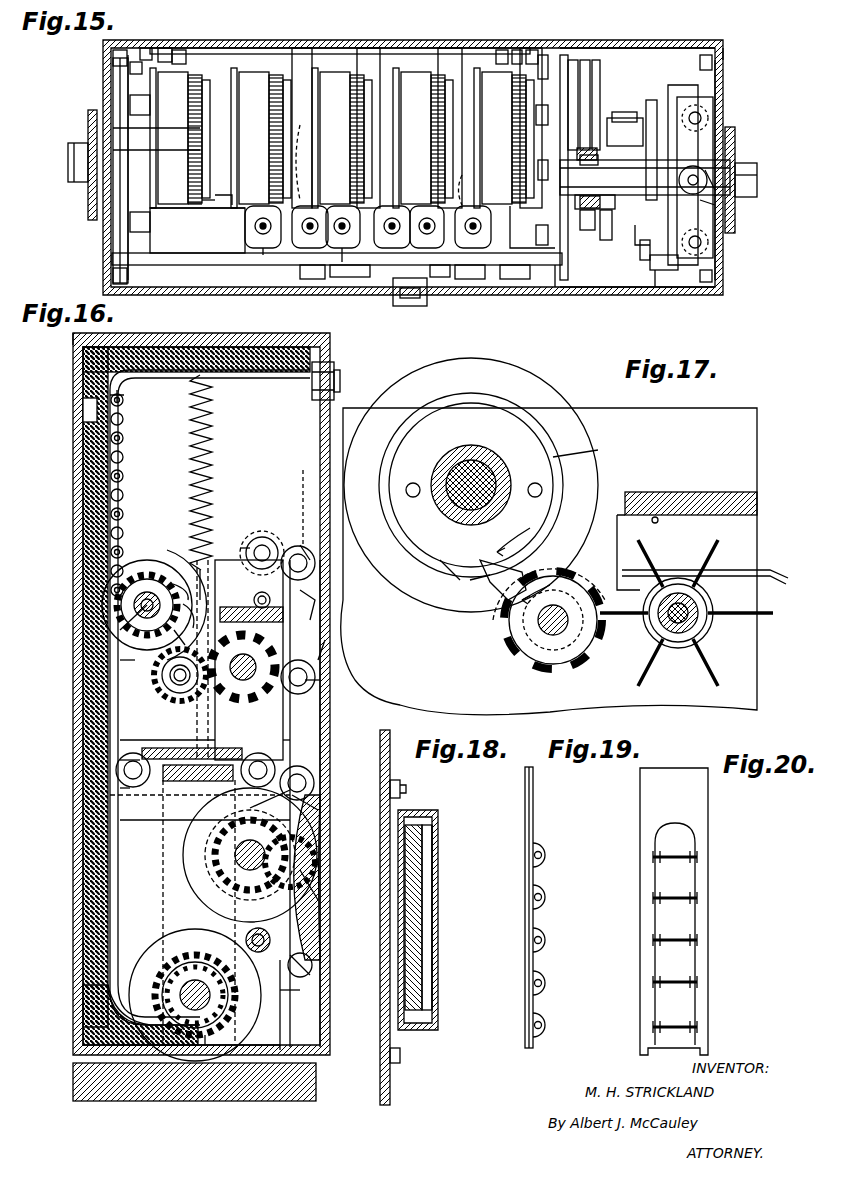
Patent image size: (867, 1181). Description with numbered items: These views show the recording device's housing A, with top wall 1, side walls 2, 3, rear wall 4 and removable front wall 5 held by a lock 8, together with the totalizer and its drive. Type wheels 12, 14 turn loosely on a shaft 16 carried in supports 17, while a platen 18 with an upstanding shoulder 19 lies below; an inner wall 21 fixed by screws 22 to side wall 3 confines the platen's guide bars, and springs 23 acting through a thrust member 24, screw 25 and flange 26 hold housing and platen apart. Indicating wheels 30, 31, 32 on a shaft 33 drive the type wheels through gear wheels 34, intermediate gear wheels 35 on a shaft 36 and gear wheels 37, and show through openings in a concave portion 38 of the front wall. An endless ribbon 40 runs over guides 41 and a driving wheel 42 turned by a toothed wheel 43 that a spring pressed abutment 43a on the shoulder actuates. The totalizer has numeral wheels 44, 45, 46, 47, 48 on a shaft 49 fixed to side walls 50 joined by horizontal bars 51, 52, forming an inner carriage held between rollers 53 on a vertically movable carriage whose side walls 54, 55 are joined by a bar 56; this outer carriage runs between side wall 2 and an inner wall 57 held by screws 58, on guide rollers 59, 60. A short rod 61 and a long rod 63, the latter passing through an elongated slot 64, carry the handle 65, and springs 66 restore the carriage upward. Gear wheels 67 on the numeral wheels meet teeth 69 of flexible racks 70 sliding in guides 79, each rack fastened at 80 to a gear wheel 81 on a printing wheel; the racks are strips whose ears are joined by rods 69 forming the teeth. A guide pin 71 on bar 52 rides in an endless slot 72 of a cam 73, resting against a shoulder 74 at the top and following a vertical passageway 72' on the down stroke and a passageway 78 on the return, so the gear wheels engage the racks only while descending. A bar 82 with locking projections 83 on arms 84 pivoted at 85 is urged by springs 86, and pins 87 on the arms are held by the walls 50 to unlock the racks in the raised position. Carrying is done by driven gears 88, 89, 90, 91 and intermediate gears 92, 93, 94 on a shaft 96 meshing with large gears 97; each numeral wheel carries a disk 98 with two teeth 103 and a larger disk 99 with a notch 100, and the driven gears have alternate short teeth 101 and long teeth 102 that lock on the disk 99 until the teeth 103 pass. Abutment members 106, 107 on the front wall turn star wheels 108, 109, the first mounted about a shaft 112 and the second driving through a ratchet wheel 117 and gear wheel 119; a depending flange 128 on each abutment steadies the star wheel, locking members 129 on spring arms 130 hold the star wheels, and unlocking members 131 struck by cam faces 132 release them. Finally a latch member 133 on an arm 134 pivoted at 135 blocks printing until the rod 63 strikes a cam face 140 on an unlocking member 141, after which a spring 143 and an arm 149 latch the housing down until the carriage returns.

In FIG. 15, the top wall 1 is at (413, 148).
In FIG. 16, the top wall 1 is at (212, 345).
In FIG. 15, the side wall 2 is at (115, 88).
In FIG. 15, the side wall 3 is at (720, 85).
In FIG. 15, the rear wall 4 is at (643, 48).
In FIG. 16, the rear wall 4 is at (120, 760).
In FIG. 18, the rear wall 4 is at (380, 1087).
In FIG. 15, the removable front wall 5 is at (610, 292).
In FIG. 16, the removable front wall 5 is at (320, 744).
In FIG. 15, the lock 8 is at (410, 306).
In FIG. 16, the lock 8 is at (340, 383).
In FIG. 16, the type wheel 12 is at (230, 1045).
In FIG. 16, the type wheel 14 is at (322, 830).
In FIG. 16, the shaft 16 is at (195, 955).
In FIG. 16, the supports 17 is at (110, 878).
In FIG. 16, the platen 18 is at (100, 1101).
In FIG. 16, the shoulder 19 is at (300, 1005).
In FIG. 15, the inner wall 21 is at (672, 85).
In FIG. 15, the screws 22 is at (706, 55).
In FIG. 15, the springs 23 is at (710, 110).
In FIG. 15, the thrust member 24 is at (660, 270).
In FIG. 15, the screw 25 is at (705, 180).
In FIG. 15, the flange 26 is at (700, 205).
In FIG. 15, the indicating wheel 30 is at (470, 280).
In FIG. 15, the indicating wheel 31 is at (365, 278).
In FIG. 15, the indicating wheel 32 is at (312, 280).
In FIG. 16, the indicating wheel 32 is at (300, 862).
In FIG. 16, the shaft 33 is at (235, 855).
In FIG. 16, the gear wheel 34 is at (312, 990).
In FIG. 15, the intermediate gear wheel 35 is at (350, 228).
In FIG. 16, the intermediate gear wheel 35 is at (270, 940).
In FIG. 16, the shaft 36 is at (268, 946).
In FIG. 16, the gear wheel 37 is at (300, 800).
In FIG. 15, the concave portion 38 is at (352, 265).
In FIG. 16, the concave portion 38 is at (320, 895).
In FIG. 15, the endless ribbon 40 is at (600, 135).
In FIG. 16, the endless ribbon 40 is at (178, 1122).
In FIG. 15, the guides 41 is at (580, 100).
In FIG. 16, the guides 41 is at (165, 800).
In FIG. 15, the driving wheel 42 is at (592, 110).
In FIG. 15, the toothed wheel 43 is at (588, 230).
In FIG. 15, the spring pressed abutment 43a is at (606, 240).
In FIG. 15, the numeral wheel 44 is at (462, 70).
In FIG. 17, the numeral wheel 44 is at (545, 390).
In FIG. 15, the numeral wheel 45 is at (408, 70).
In FIG. 15, the numeral wheel 46 is at (335, 70).
In FIG. 16, the numeral wheel 46 is at (160, 570).
In FIG. 15, the numeral wheel 47 is at (190, 60).
In FIG. 15, the numeral wheel 48 is at (112, 128).
In FIG. 15, the shaft 49 is at (150, 148).
In FIG. 16, the shaft 49 is at (134, 607).
In FIG. 17, the shaft 49 is at (470, 450).
In FIG. 15, the side walls 50 is at (150, 245).
In FIG. 16, the side walls 50 is at (290, 727).
In FIG. 17, the side walls 50 is at (735, 412).
In FIG. 15, the horizontal bar 51 is at (205, 252).
In FIG. 16, the horizontal bar 51 is at (251, 594).
In FIG. 17, the horizontal bar 51 is at (757, 503).
In FIG. 16, the horizontal bar 52 is at (167, 740).
In FIG. 15, the rollers 53 is at (130, 105).
In FIG. 16, the rollers 53 is at (250, 545).
In FIG. 15, the side wall 54 is at (118, 190).
In FIG. 15, the side wall 55 is at (580, 245).
In FIG. 16, the side wall 55 is at (120, 800).
In FIG. 16, the bar 56 is at (200, 782).
In FIG. 15, the vertical inner wall 57 is at (555, 290).
In FIG. 15, the screws 58 is at (570, 55).
In FIG. 15, the guide rollers 59 is at (113, 56).
In FIG. 16, the guide rollers 59 is at (265, 801).
In FIG. 15, the guide rollers 60 is at (542, 55).
In FIG. 16, the guide rollers 60 is at (298, 694).
In FIG. 15, the short rod 61 is at (70, 163).
In FIG. 15, the long rod 63 is at (757, 170).
In FIG. 16, the long rod 63 is at (170, 700).
In FIG. 16, the elongated slot 64 is at (190, 500).
In FIG. 15, the handle 65 is at (90, 135).
In FIG. 16, the springs 66 is at (214, 415).
In FIG. 16, the gear wheel 67 is at (105, 635).
In FIG. 16, the teeth 69 is at (124, 460).
In FIG. 19, the teeth 69 is at (548, 940).
In FIG. 20, the teeth 69 is at (700, 905).
In FIG. 16, the flexible racks 70 is at (98, 692).
In FIG. 19, the flexible racks 70 is at (535, 838).
In FIG. 20, the flexible racks 70 is at (700, 830).
In FIG. 18, the guide pin 71 is at (430, 812).
In FIG. 18, the endless slot 72 is at (448, 917).
In FIG. 16, the vertical passageway 72' is at (323, 1005).
In FIG. 18, the cam 73 is at (438, 912).
In FIG. 18, the shoulder 74 is at (395, 815).
In FIG. 18, the vertical passageway 78 is at (425, 885).
In FIG. 15, the guide 79 is at (302, 48).
In FIG. 16, the guide 79 is at (83, 528).
In FIG. 16, the fastening 80 is at (110, 975).
In FIG. 16, the gear wheel 81 is at (170, 975).
In FIG. 15, the bar 82 is at (230, 48).
In FIG. 16, the bar 82 is at (83, 410).
In FIG. 16, the locking projections 83 is at (124, 402).
In FIG. 15, the arms 84 is at (130, 68).
In FIG. 15, the pivot 85 is at (180, 50).
In FIG. 15, the springs 86 is at (165, 48).
In FIG. 15, the pins 87 is at (146, 48).
In FIG. 15, the driven gear 88 is at (468, 231).
In FIG. 17, the driven gear 88 is at (515, 672).
In FIG. 15, the driven gear 89 is at (427, 231).
In FIG. 15, the driven gear 90 is at (320, 240).
In FIG. 16, the driven gear 90 is at (120, 705).
In FIG. 15, the driven gear 91 is at (195, 204).
In FIG. 15, the intermediate gear 92 is at (410, 226).
In FIG. 15, the intermediate gear 93 is at (359, 234).
In FIG. 15, the intermediate gear 94 is at (263, 250).
In FIG. 16, the shaft 96 is at (120, 665).
In FIG. 15, the large gear 97 is at (234, 68).
In FIG. 15, the disk 98 is at (232, 110).
In FIG. 16, the disk 98 is at (105, 570).
In FIG. 17, the disk 98 is at (560, 452).
In FIG. 15, the larger disk 99 is at (238, 88).
In FIG. 16, the larger disk 99 is at (135, 562).
In FIG. 17, the larger disk 99 is at (435, 600).
In FIG. 15, the notch 100 is at (370, 155).
In FIG. 16, the notch 100 is at (234, 541).
In FIG. 17, the notch 100 is at (475, 585).
In FIG. 15, the short teeth 101 is at (215, 205).
In FIG. 16, the short teeth 101 is at (105, 652).
In FIG. 17, the short teeth 101 is at (485, 565).
In FIG. 15, the long teeth 102 is at (228, 208).
In FIG. 16, the long teeth 102 is at (120, 680).
In FIG. 17, the long teeth 102 is at (550, 525).
In FIG. 15, the teeth 103 is at (274, 227).
In FIG. 17, the teeth 103 is at (478, 612).
In FIG. 15, the abutment member 106 is at (512, 280).
In FIG. 16, the abutment member 106 is at (298, 605).
In FIG. 15, the abutment member 107 is at (440, 278).
In FIG. 16, the abutment member 107 is at (290, 546).
In FIG. 17, the star wheel 108 is at (712, 640).
In FIG. 16, the star wheel 109 is at (298, 743).
In FIG. 16, the shaft 112 is at (320, 685).
In FIG. 17, the shaft 112 is at (700, 605).
In FIG. 16, the ratchet wheel 117 is at (190, 689).
In FIG. 16, the gear wheel 119 is at (243, 680).
In FIG. 16, the depending flange 128 is at (262, 561).
In FIG. 17, the locking members 129 is at (553, 633).
In FIG. 17, the spring arms 130 is at (645, 535).
In FIG. 16, the unlocking member 131 is at (320, 665).
In FIG. 17, the unlocking member 131 is at (760, 570).
In FIG. 16, the cam face 132 is at (340, 664).
In FIG. 15, the latch member 133 is at (638, 233).
In FIG. 15, the arm 134 is at (652, 287).
In FIG. 15, the pivot 135 is at (642, 258).
In FIG. 15, the cam face 140 is at (740, 140).
In FIG. 15, the unlocking member 141 is at (645, 177).
In FIG. 15, the spring 143 is at (625, 132).
In FIG. 15, the arm 149 is at (650, 100).
In FIG. 15, the housing A is at (720, 55).
In FIG. 16, the housing A is at (75, 350).